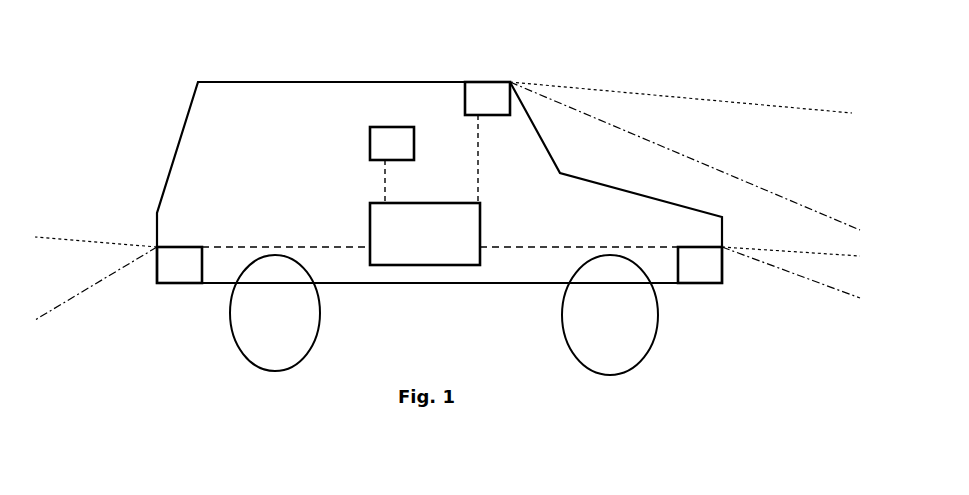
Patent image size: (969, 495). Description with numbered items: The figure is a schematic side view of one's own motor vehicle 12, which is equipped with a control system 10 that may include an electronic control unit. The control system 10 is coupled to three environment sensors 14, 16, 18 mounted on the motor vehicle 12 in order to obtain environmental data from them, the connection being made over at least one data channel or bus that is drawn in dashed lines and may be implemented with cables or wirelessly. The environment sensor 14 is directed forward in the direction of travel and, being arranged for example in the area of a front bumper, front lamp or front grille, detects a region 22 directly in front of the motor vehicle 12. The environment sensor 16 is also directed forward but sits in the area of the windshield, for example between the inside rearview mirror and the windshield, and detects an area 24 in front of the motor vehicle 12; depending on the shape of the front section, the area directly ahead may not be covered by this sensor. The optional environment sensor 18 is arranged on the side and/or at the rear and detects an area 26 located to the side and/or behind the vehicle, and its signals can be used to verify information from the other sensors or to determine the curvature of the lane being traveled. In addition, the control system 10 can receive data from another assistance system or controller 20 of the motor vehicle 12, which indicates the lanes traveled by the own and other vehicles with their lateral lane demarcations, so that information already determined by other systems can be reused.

The control system 10 is at (425, 234).
The motor vehicle 12 is at (225, 82).
The environment sensor 14 is at (700, 265).
The environment sensor 16 is at (487, 142).
The environment sensor 18 is at (179, 265).
The assistance system 20 is at (392, 165).
The region in front of the motor vehicle 22 is at (791, 272).
The area in front of the motor vehicle 24 is at (685, 156).
The area to the side and/or behind the motor vehicle 26 is at (96, 278).